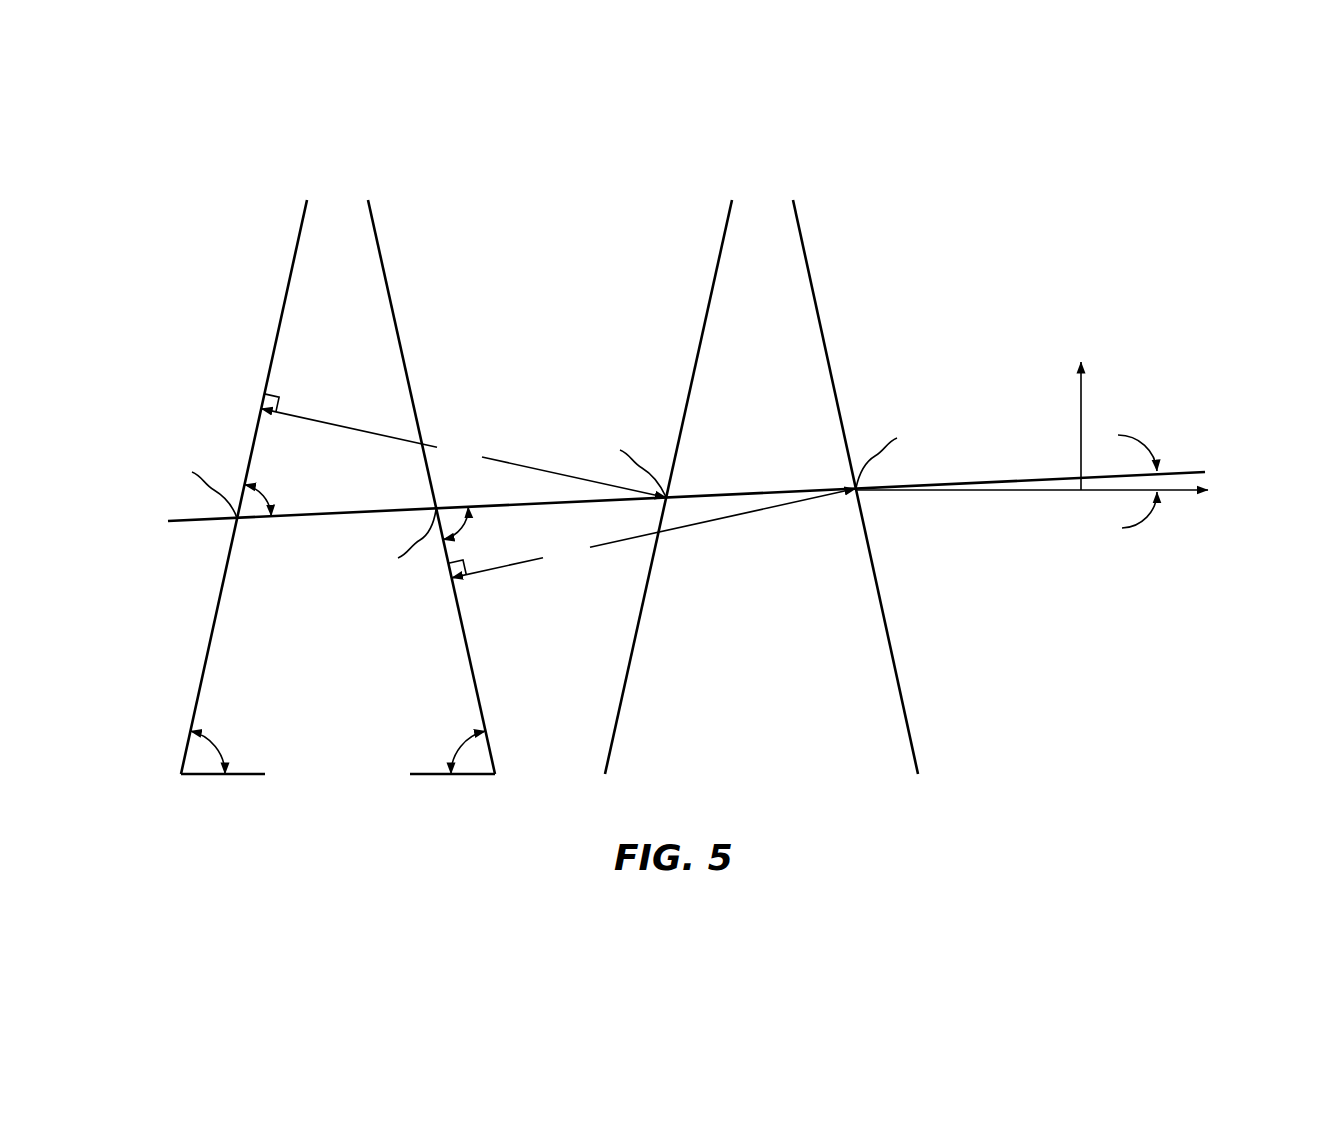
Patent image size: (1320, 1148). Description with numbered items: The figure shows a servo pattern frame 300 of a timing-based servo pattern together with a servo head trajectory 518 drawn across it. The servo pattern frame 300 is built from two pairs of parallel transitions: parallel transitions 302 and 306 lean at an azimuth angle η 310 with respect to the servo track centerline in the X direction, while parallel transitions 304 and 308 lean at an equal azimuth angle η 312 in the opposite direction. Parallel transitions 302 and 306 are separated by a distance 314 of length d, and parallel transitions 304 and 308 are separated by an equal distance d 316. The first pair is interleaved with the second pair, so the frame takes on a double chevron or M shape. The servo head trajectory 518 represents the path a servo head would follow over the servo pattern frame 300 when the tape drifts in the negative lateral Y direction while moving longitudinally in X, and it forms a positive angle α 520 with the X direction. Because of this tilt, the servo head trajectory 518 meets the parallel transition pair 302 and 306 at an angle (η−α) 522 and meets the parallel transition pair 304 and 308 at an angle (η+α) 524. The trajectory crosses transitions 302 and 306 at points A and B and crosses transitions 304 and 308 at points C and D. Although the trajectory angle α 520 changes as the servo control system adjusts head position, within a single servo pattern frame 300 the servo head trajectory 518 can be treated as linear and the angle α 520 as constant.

The servo pattern frame 300 is at (1017, 208).
The parallel transition 302 is at (302, 213).
The parallel transition 304 is at (375, 222).
The parallel transition 306 is at (727, 213).
The parallel transition 308 is at (797, 212).
The azimuth angle η 310 is at (208, 737).
The azimuth angle η 312 is at (473, 737).
The distance d 314 is at (502, 458).
The distance d 316 is at (747, 515).
The servo head trajectory 518 is at (188, 523).
The trajectory angle α 520 is at (1118, 528).
The angle (η−α) 522 is at (265, 497).
The angle (η+α) 524 is at (465, 524).